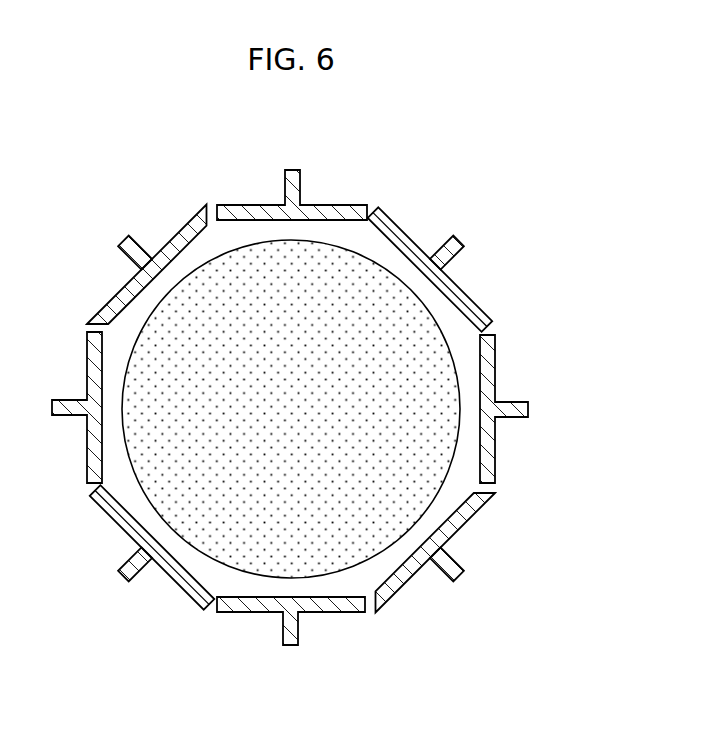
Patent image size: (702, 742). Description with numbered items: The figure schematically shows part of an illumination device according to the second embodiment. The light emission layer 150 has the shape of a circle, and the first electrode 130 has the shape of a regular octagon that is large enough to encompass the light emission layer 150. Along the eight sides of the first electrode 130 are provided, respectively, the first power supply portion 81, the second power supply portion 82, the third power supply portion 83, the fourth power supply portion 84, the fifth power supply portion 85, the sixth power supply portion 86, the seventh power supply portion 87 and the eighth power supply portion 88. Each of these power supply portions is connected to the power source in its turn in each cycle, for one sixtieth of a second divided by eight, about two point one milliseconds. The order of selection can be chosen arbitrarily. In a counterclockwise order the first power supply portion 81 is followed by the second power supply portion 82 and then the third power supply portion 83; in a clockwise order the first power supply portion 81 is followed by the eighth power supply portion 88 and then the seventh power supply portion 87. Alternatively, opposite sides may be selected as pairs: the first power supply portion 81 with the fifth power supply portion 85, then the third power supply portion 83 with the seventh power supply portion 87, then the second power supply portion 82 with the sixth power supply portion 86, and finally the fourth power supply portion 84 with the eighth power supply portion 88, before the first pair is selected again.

The first power supply portion 81 is at (256, 606).
The second power supply portion 82 is at (464, 518).
The third power supply portion 83 is at (495, 435).
The fourth power supply portion 84 is at (462, 296).
The fifth power supply portion 85 is at (349, 205).
The sixth power supply portion 86 is at (118, 287).
The seventh power supply portion 87 is at (88, 358).
The eighth power supply portion 88 is at (120, 521).
The first electrode 130 is at (285, 411).
The light emission layer 150 is at (440, 370).